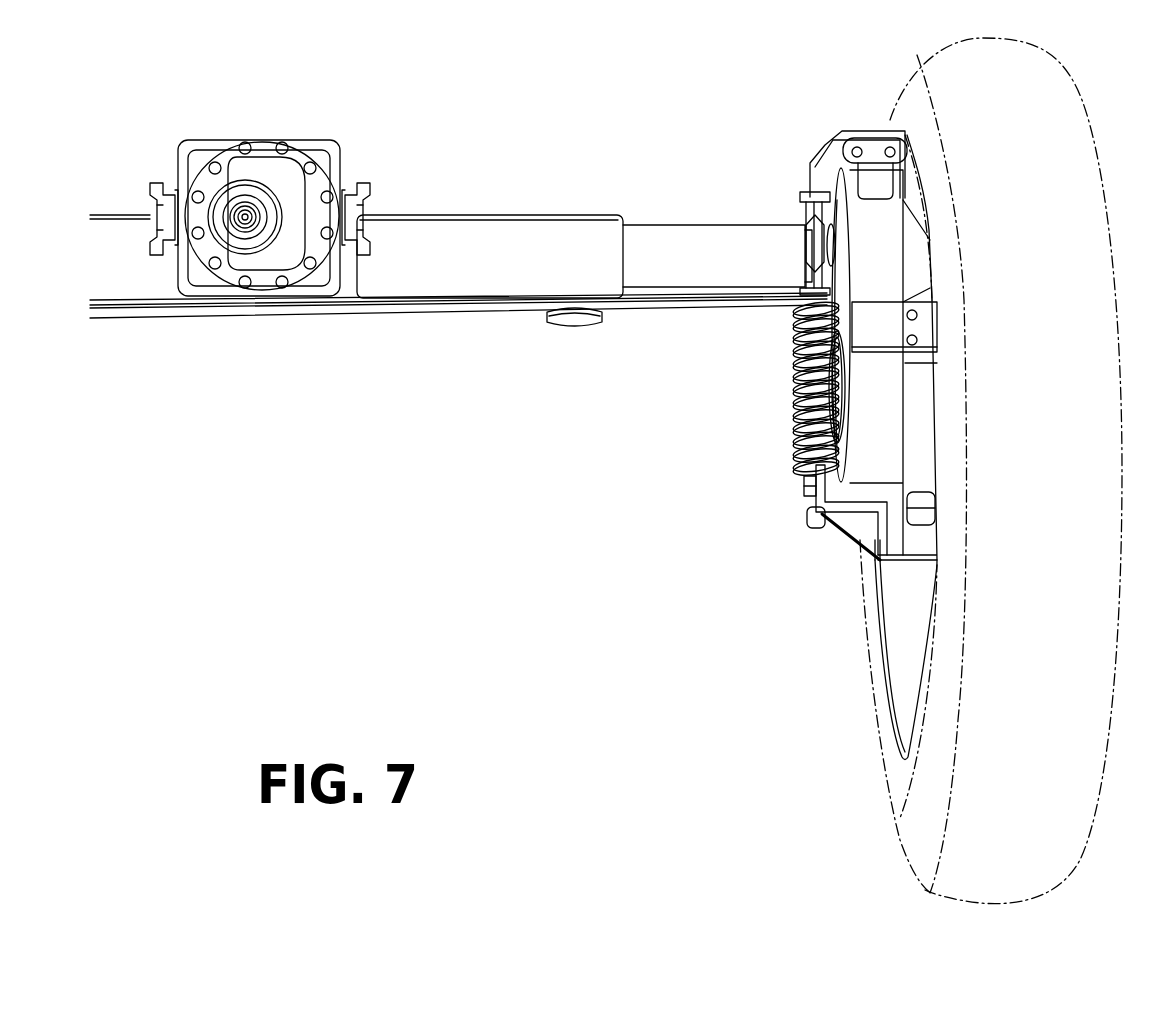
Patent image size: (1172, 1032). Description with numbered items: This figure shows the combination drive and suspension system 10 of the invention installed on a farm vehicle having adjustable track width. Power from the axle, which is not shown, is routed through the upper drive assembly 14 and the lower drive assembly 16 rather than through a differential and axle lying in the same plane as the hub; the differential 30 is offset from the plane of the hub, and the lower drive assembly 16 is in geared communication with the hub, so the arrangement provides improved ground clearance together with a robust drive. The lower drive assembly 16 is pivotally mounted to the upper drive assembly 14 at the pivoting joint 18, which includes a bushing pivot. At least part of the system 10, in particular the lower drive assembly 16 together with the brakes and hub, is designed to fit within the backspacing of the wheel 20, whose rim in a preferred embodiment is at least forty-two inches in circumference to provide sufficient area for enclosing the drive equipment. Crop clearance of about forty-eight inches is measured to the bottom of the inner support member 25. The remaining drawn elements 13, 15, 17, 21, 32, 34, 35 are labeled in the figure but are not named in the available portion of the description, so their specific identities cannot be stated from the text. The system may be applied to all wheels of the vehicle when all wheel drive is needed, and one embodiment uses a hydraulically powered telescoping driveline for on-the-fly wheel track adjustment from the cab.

The combination drive and suspension system 10 is at (588, 603).
The spring seat bracket 13 is at (792, 332).
The upper drive assembly 14 is at (868, 217).
The actuator cylinder 15 is at (543, 237).
The lower drive assembly 16 is at (917, 553).
The lower bracket 17 is at (821, 527).
The pivoting joint 18 is at (796, 398).
The wheel 20 is at (902, 692).
The tire 21 is at (900, 788).
The inner support member 25 is at (680, 233).
The differential 30 is at (197, 268).
The output shaft 32 is at (249, 218).
The left coupling 34 is at (150, 248).
The right coupling 35 is at (363, 245).